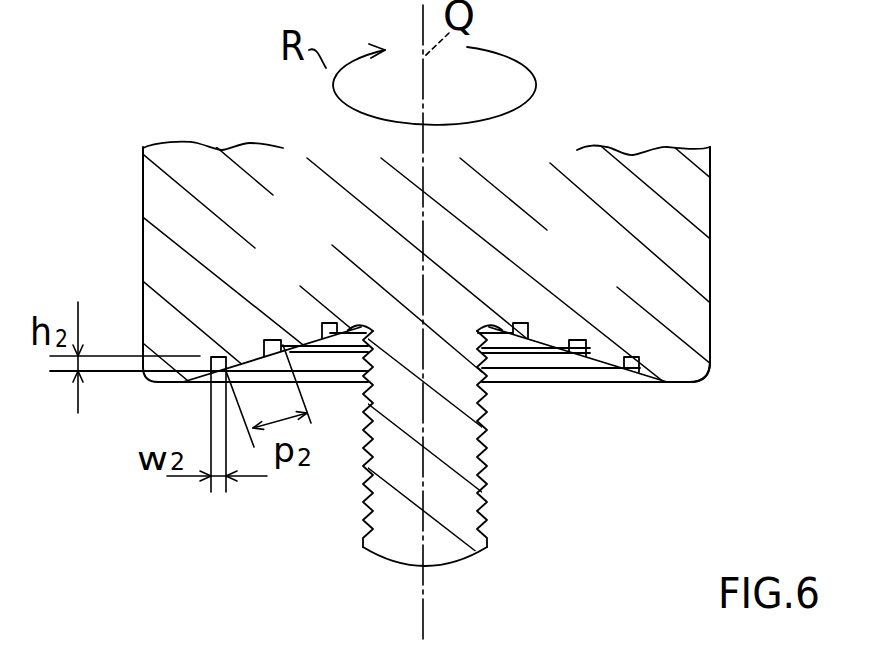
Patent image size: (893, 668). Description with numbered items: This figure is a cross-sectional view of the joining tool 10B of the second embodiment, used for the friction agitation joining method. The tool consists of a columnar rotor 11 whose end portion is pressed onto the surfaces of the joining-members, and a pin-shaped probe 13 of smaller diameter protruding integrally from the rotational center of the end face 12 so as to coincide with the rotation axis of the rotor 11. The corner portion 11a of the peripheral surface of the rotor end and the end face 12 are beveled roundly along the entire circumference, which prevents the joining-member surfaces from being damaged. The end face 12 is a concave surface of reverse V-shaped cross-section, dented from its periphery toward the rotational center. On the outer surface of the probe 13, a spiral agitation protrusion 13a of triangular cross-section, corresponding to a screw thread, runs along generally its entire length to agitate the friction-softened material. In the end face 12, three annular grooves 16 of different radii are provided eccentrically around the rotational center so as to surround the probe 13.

The joining tool 10B is at (141, 170).
The rotor 11 is at (192, 233).
The corner portion 11a is at (698, 378).
The end face 12 is at (551, 340).
The probe 13 is at (394, 539).
The spiral agitation protrusion 13a is at (365, 460).
The annular grooves 16 is at (214, 357).